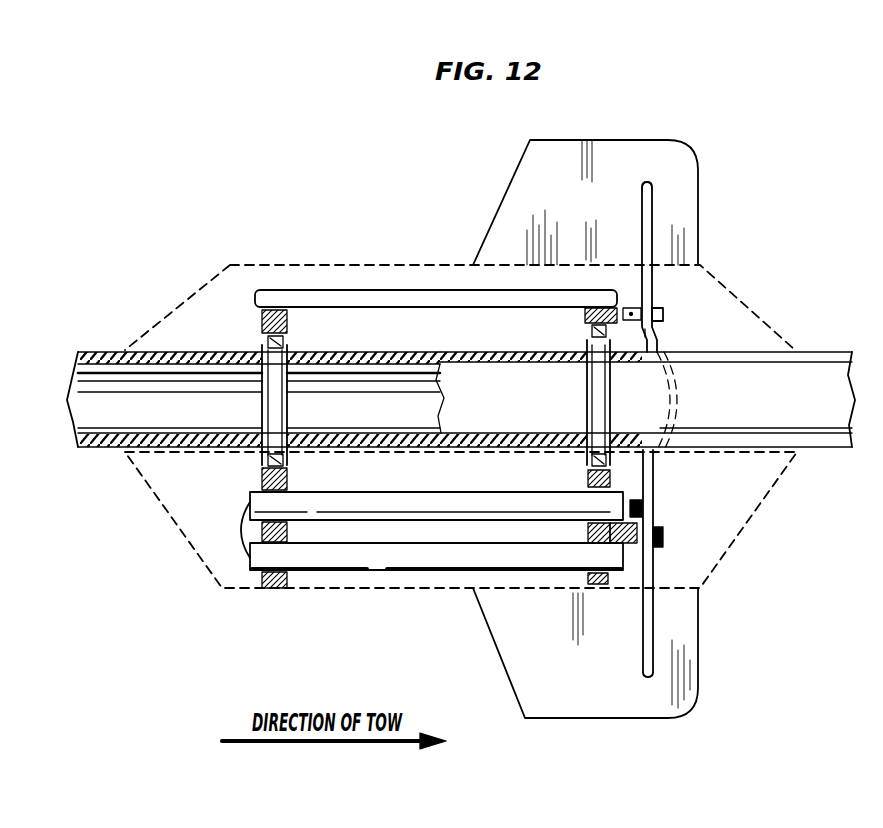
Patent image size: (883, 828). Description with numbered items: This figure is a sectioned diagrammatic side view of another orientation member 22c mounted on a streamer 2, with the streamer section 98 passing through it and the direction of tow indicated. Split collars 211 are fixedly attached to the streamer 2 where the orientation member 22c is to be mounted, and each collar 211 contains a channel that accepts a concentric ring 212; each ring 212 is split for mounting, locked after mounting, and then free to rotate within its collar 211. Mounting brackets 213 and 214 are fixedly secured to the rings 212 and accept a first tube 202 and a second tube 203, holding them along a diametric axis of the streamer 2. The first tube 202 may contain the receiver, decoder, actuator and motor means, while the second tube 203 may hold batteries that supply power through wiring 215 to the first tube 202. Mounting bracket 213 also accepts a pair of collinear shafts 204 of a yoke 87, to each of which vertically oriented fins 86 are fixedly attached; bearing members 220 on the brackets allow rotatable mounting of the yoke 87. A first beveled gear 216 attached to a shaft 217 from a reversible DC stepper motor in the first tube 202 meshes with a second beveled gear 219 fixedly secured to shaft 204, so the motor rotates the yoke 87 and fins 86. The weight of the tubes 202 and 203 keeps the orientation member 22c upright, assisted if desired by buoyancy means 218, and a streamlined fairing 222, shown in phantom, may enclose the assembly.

The orientation member 22c is at (486, 360).
The tow cable section 98 is at (83, 352).
The streamer 2 is at (821, 414).
The fins 86 is at (564, 178).
The fairing 222 is at (776, 332).
The buoyancy means 218 is at (434, 299).
The mounting bracket 214 is at (257, 320).
The ring 212 is at (287, 341).
The split collar 211 is at (273, 418).
The first tube 202 is at (357, 507).
The second tube 203 is at (385, 558).
The wiring 215 is at (238, 525).
The mounting bracket 213 is at (641, 306).
The first beveled gear 216 is at (674, 410).
The bearing members 220 is at (660, 311).
The second beveled gear 219 is at (660, 510).
The yoke 87 is at (662, 333).
The shaft 204 is at (651, 224).
The shaft 217 is at (645, 588).